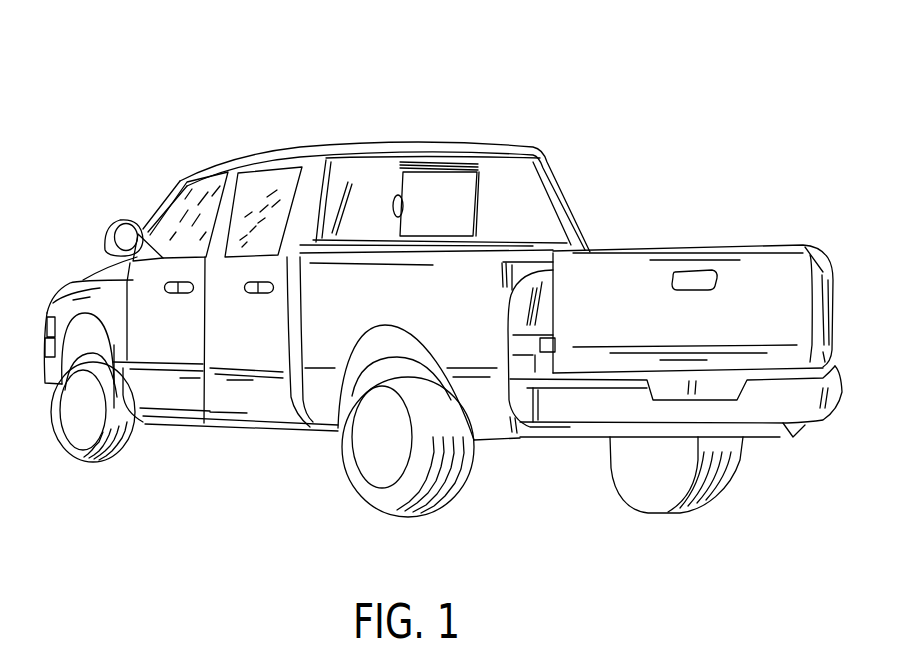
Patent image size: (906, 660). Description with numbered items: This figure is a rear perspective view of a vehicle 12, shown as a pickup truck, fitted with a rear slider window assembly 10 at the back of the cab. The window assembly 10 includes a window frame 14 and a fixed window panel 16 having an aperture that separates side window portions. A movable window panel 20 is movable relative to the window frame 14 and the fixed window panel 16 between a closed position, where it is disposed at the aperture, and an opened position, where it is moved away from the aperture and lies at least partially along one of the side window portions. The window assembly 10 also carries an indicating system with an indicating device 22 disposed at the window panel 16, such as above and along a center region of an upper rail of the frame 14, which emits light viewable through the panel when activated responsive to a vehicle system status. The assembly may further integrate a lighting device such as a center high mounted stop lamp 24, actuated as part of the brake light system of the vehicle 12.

The rear slider window assembly 10 is at (508, 203).
The vehicle 12 is at (268, 98).
The window frame 14 is at (346, 254).
The fixed window panel 16 is at (378, 181).
The movable window panel 20 is at (460, 188).
The indicating device 22 is at (340, 179).
The center high mounted stop lamp 24 is at (418, 169).